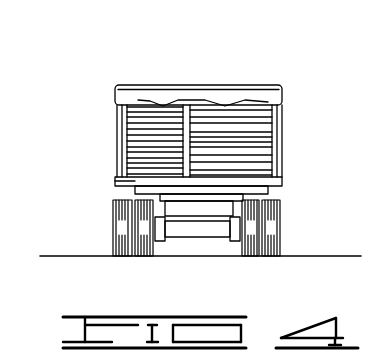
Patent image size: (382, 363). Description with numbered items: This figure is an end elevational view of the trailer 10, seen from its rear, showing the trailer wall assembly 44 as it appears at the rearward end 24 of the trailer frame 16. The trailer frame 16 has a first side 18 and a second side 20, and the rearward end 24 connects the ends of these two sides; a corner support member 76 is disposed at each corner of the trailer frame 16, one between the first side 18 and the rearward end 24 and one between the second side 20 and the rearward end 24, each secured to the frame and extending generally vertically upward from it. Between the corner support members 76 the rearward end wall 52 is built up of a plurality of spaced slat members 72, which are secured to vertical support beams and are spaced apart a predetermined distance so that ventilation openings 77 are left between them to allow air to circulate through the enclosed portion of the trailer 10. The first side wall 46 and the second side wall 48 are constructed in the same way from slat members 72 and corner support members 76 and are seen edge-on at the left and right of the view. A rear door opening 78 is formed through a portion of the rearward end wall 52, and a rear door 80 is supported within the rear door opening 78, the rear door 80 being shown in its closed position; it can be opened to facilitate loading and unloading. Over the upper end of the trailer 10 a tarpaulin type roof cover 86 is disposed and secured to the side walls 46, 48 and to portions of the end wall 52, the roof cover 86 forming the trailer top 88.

The trailer 10 is at (208, 82).
The trailer frame 16 is at (280, 183).
The first side 18 is at (280, 178).
The second side 20 is at (115, 182).
The rearward end 24 is at (218, 186).
The trailer wall assembly 44 is at (282, 112).
The first side wall 46 is at (115, 120).
The second side wall 48 is at (282, 125).
The rearward end wall 52 is at (228, 148).
The slat members 72 is at (257, 125).
The corner support member 76 is at (117, 141).
The ventilation openings 77 is at (200, 128).
The rear door opening 78 is at (178, 160).
The rear door 80 is at (143, 127).
The roof cover 86 is at (231, 95).
The trailer top 88 is at (146, 83).